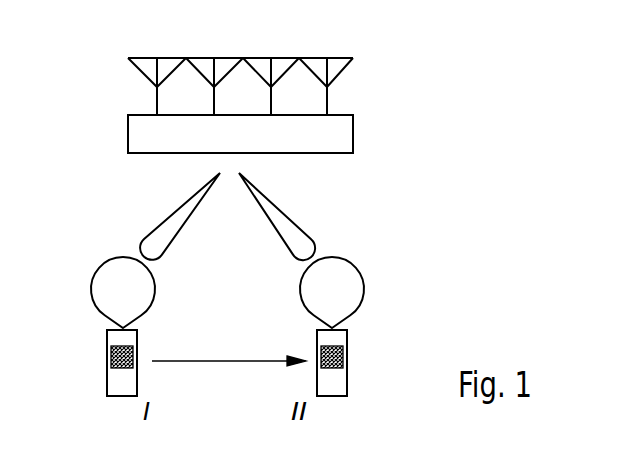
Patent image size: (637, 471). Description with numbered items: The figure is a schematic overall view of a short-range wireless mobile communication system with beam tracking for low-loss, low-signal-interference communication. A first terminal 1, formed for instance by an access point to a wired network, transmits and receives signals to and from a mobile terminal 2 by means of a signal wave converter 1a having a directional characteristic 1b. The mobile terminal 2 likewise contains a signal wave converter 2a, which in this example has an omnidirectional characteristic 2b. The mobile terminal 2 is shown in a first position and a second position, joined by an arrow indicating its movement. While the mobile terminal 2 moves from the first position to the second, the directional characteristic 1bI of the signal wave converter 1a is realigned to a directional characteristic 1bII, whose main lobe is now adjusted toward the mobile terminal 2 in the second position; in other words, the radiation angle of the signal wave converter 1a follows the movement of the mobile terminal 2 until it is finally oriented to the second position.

The first terminal 1 is at (353, 137).
The signal wave converter 1a is at (328, 58).
The directional characteristic 1b is at (231, 216).
The directional characteristic in first position 1bI is at (177, 205).
The directional characteristic in second position 1bII is at (285, 208).
The mobile terminal 2 is at (107, 385).
The signal wave converter 2a is at (111, 352).
The omnidirectional characteristic 2b is at (91, 288).